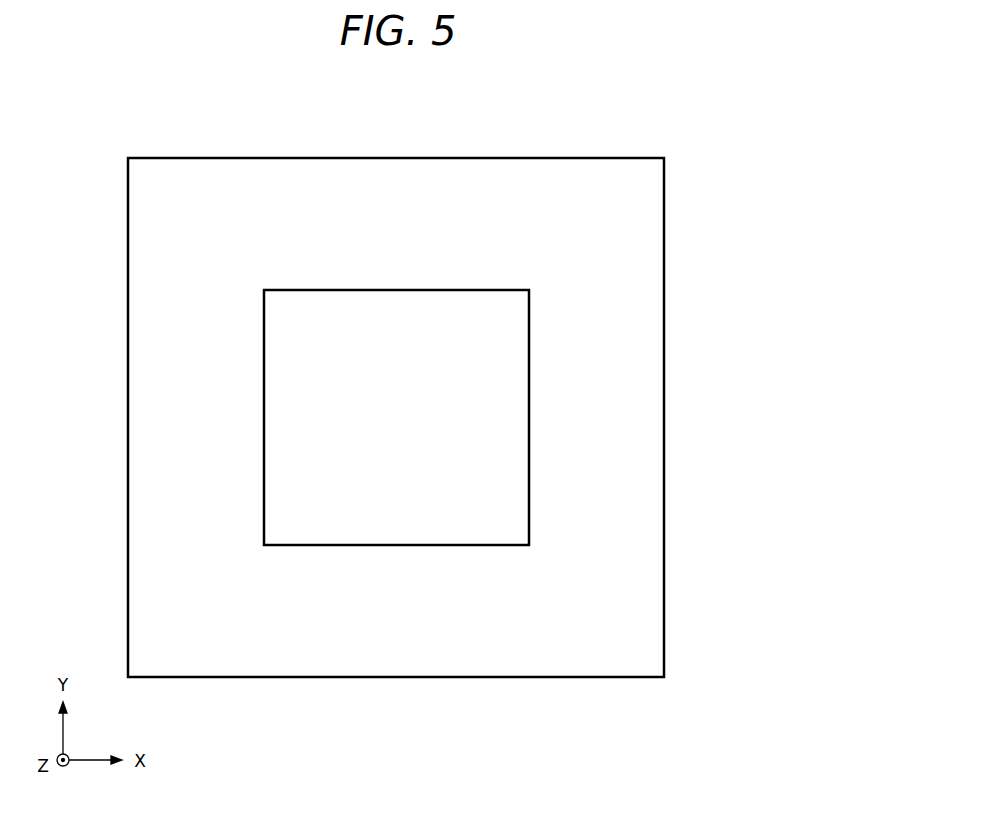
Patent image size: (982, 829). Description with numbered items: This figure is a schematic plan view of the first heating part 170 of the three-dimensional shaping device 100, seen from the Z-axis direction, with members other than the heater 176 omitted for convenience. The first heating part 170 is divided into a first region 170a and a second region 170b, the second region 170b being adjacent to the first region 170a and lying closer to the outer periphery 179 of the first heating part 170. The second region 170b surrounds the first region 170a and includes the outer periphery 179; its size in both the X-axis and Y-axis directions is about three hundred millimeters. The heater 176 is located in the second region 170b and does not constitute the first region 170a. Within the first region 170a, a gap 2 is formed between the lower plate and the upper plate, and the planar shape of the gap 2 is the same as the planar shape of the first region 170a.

The three-dimensional shaping device 100 is at (683, 125).
The gap 2 is at (448, 411).
The first heating part 170 is at (437, 94).
The first region 170a is at (323, 343).
The second region 170b is at (435, 213).
The heater 176 is at (628, 342).
The outer periphery 179 is at (665, 283).